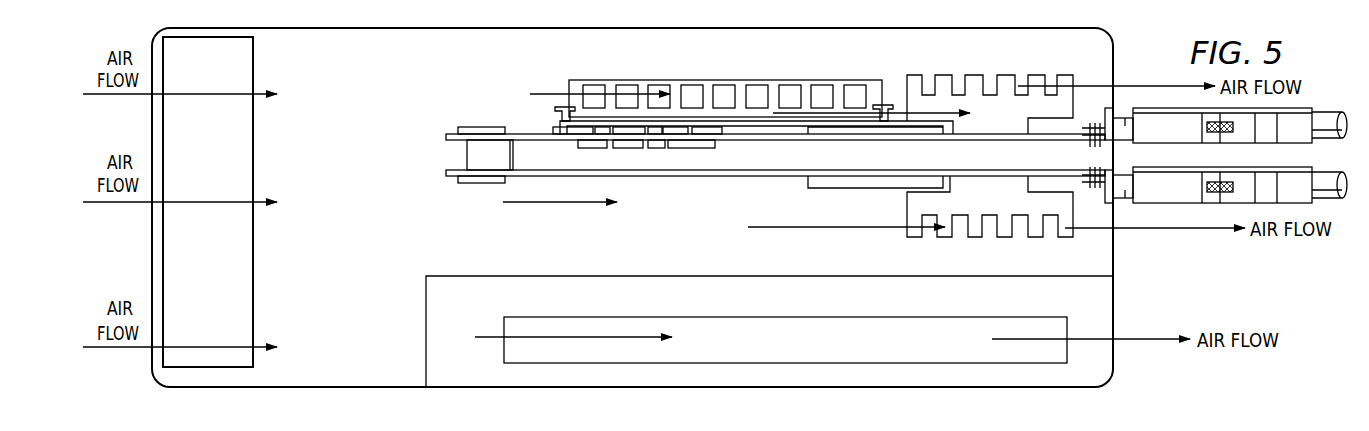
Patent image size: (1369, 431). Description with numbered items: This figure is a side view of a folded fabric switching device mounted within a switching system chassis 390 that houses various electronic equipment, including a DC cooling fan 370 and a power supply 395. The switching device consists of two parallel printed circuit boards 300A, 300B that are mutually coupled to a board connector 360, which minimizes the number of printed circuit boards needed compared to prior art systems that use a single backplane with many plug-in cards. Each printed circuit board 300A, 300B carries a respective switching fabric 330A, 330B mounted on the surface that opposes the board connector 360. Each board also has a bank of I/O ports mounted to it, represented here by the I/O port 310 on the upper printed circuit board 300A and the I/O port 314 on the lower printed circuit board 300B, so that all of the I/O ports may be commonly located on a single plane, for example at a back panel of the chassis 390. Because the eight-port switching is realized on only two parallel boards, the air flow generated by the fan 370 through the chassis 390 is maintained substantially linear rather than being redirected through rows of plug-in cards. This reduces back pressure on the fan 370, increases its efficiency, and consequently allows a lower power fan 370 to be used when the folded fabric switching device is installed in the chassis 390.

The DC fan 370 is at (253, 174).
The switching fabric 330A is at (473, 131).
The printed circuit board 300A is at (447, 147).
The board connector 360 is at (467, 157).
The switching fabric 330B is at (473, 183).
The printed circuit board 300B is at (683, 177).
The I/O port 310 is at (1122, 116).
The I/O port 314 is at (1124, 192).
The system chassis 390 is at (1116, 300).
The power supply 395 is at (431, 347).